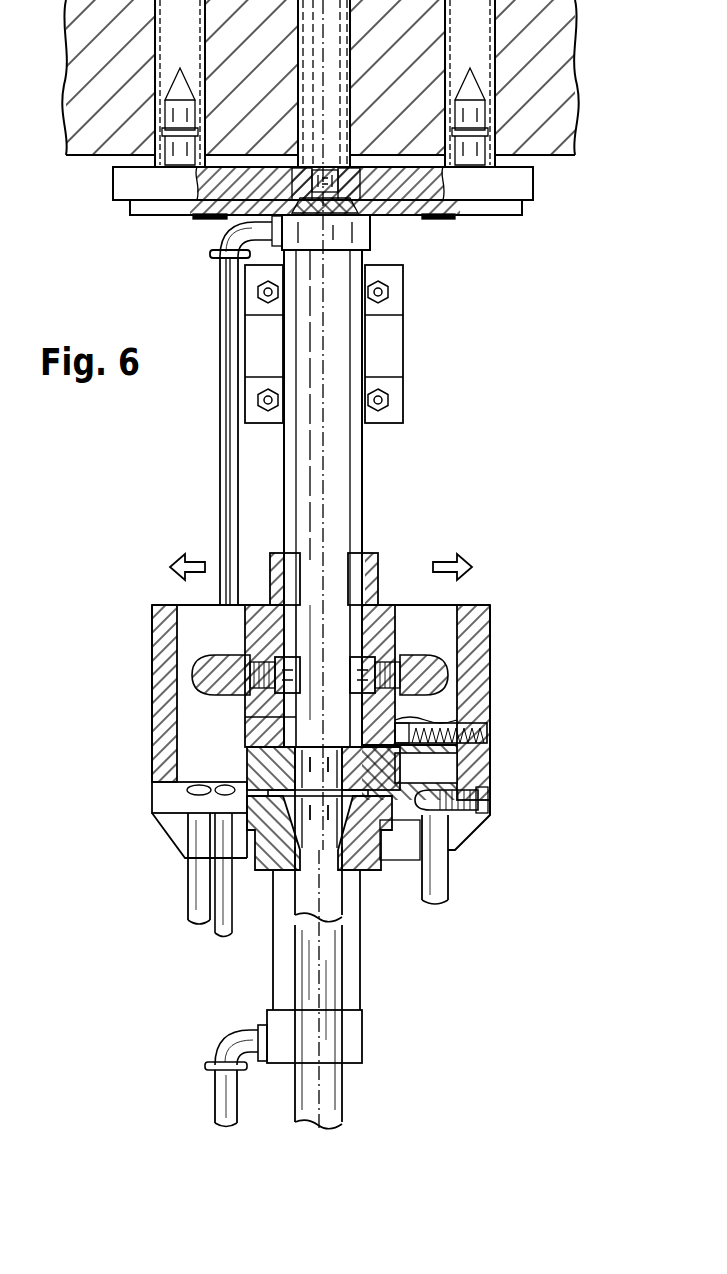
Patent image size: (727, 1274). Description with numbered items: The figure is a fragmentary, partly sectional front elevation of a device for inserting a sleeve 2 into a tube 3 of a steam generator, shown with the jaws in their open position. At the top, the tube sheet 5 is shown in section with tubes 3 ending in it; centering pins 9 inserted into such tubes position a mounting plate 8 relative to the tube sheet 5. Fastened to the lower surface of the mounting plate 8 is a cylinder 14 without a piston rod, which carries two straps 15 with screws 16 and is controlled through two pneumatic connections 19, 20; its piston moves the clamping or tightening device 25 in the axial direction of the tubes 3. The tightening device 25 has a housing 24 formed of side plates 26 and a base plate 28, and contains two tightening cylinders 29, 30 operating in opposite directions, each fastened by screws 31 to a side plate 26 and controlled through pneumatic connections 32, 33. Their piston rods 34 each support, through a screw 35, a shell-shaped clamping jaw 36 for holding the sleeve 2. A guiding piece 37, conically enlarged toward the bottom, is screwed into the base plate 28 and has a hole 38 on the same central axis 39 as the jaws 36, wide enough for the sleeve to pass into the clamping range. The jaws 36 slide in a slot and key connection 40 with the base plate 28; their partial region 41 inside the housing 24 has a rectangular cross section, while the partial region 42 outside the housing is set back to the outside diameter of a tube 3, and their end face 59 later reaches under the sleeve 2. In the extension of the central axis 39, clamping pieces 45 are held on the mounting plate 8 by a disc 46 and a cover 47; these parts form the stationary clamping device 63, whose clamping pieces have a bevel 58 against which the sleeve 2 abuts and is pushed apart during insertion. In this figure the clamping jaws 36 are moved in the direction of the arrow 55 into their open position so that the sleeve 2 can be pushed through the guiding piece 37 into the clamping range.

The sleeve 2 is at (330, 1095).
The tube 3 is at (350, 165).
The tube sheet 5 is at (566, 47).
The mounting plate 8 is at (113, 199).
The centering pins 9 is at (478, 115).
The cylinder 14 is at (353, 453).
The straps 15 is at (393, 278).
The screws 16 is at (385, 295).
The pneumatic connection 19 is at (220, 1098).
The pneumatic connection 20 is at (227, 440).
The housing 24 is at (507, 682).
The tightening device 25 is at (537, 596).
The side plates 26 is at (483, 655).
The base plate 28 is at (393, 805).
The tightening cylinder 29 is at (447, 637).
The tightening cylinder 30 is at (197, 612).
The screws 31 is at (486, 737).
The pneumatic connection 32 is at (197, 877).
The pneumatic connection 33 is at (212, 930).
The piston rods 34 is at (410, 672).
The screw 35 is at (163, 623).
The clamping jaw 36 is at (243, 733).
The guiding piece 37 is at (365, 855).
The hole 38 is at (363, 788).
The central axis 39 is at (315, 720).
The slot and key connection 40 is at (418, 757).
The partial region 41 is at (307, 639).
The partial region 42 is at (312, 561).
The clamping pieces 45 is at (215, 257).
The disc 46 is at (455, 222).
The cover 47 is at (405, 208).
The arrow 55 is at (172, 563).
The bevel 58 is at (368, 225).
The end face 59 is at (366, 563).
The clamping device 63 is at (216, 228).